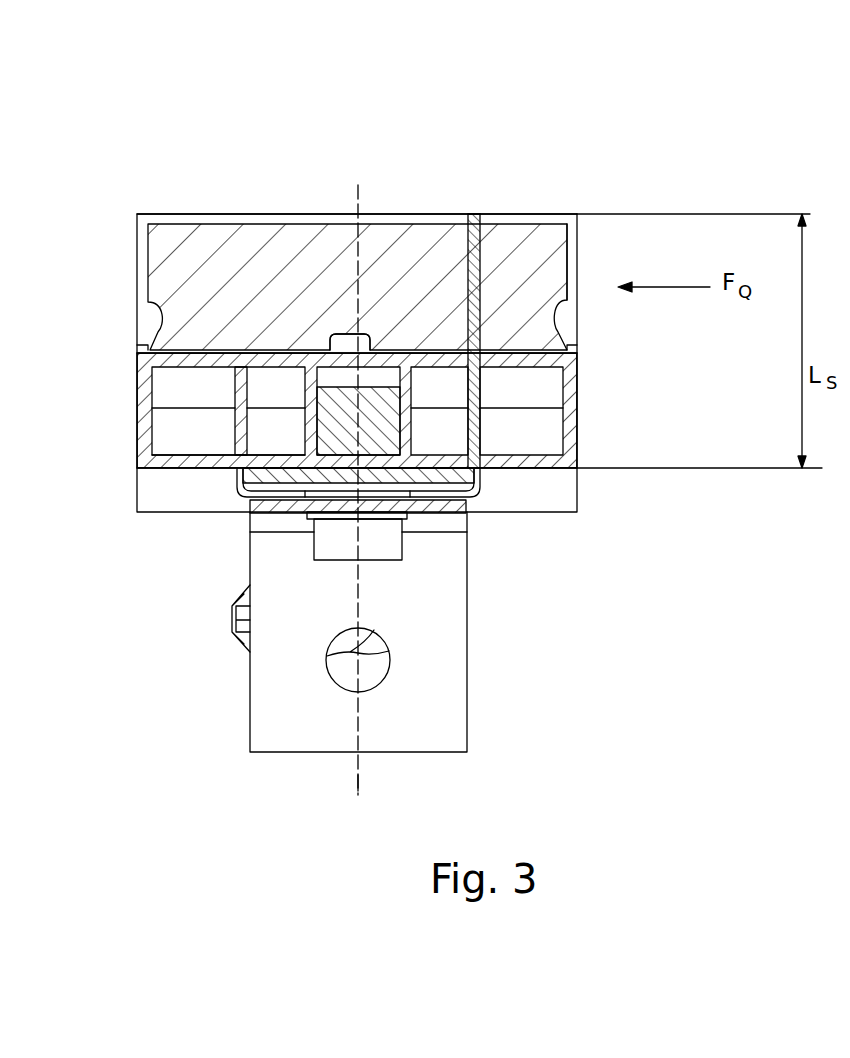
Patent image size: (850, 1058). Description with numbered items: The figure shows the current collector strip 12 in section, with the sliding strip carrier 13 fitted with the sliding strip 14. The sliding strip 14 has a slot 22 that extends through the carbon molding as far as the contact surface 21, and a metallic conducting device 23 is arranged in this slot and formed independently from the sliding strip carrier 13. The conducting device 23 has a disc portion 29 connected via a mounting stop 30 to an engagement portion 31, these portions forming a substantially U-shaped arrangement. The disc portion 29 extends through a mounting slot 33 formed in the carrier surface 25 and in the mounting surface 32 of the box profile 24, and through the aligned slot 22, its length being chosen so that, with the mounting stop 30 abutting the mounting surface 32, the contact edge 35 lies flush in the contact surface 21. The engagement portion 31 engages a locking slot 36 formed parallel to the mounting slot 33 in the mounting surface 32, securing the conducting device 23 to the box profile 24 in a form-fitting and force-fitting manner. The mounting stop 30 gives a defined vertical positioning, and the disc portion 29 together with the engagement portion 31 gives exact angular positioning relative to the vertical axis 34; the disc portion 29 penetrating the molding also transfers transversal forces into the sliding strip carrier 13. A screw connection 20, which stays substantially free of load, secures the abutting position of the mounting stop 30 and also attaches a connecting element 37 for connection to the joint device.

The current collector strip 12 is at (478, 151).
The sliding strip carrier 13 is at (584, 408).
The sliding strip 14 is at (137, 247).
The screw connection 20 is at (412, 543).
The contact surface 21 is at (285, 199).
The slot 22 is at (485, 297).
The conducting device 23 is at (480, 214).
The box profile 24 is at (555, 465).
The carrier surface 25 is at (548, 352).
The disc portion 29 is at (482, 262).
The mounting stop 30 is at (330, 487).
The engagement portion 31 is at (237, 387).
The mounting surface 32 is at (545, 463).
The mounting slot 33 is at (237, 483).
The vertical axis 34 is at (360, 783).
The contact edge 35 is at (472, 213).
The locking slot 36 is at (230, 455).
The connecting element 37 is at (447, 713).